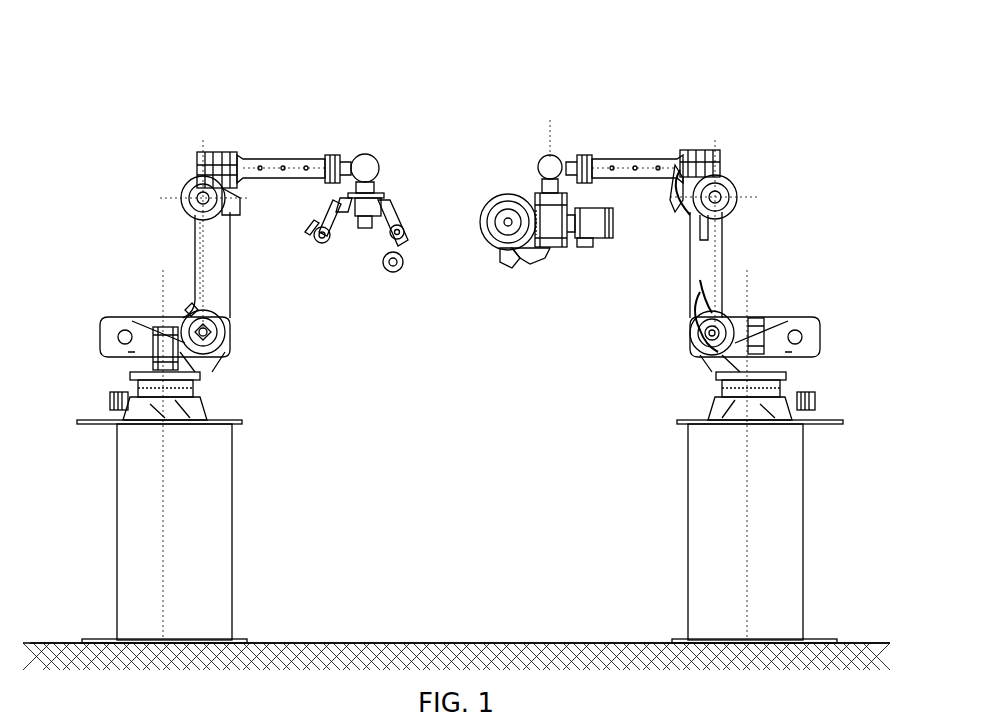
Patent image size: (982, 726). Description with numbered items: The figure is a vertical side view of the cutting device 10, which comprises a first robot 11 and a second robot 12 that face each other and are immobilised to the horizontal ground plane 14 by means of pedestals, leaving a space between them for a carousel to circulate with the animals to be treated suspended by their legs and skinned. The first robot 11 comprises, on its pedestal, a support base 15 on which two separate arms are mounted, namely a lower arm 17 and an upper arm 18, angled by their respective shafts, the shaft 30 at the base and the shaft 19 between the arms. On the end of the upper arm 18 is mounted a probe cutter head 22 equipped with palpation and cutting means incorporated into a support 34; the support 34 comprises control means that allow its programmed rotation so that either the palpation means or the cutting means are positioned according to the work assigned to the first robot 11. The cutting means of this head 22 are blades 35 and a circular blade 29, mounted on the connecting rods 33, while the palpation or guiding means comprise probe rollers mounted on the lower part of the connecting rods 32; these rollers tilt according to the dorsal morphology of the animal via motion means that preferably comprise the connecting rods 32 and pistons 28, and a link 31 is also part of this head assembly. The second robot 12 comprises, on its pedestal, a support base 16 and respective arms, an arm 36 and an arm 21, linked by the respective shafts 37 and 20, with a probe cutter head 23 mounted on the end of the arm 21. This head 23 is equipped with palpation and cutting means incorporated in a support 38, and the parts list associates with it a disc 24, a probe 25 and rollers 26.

The cutting device 10 is at (440, 95).
The first robot 11 is at (84, 188).
The second robot 12 is at (845, 198).
The ground plane 14 is at (402, 655).
The support base 15 is at (193, 403).
The support base 16 is at (783, 390).
The lower arm 17 is at (217, 258).
The upper arm 18 is at (268, 165).
The shaft 19 is at (193, 183).
The shaft 20 is at (732, 183).
The arm 21 is at (627, 165).
The probe cutter head 22 is at (420, 195).
The probe cutter head 23 is at (620, 193).
The disc 24 is at (493, 207).
The probe 25 is at (517, 267).
The rollers 26 is at (503, 257).
The pistons 28 is at (383, 227).
The circular blade 29 is at (322, 243).
The shaft 30 is at (227, 332).
The link 31 is at (368, 163).
The connecting rod 32 is at (397, 230).
The connecting rod 33 is at (318, 210).
The support 34 is at (378, 198).
The blades 35 is at (307, 227).
The arm 36 is at (705, 263).
The shaft 37 is at (720, 315).
The support 38 is at (538, 190).